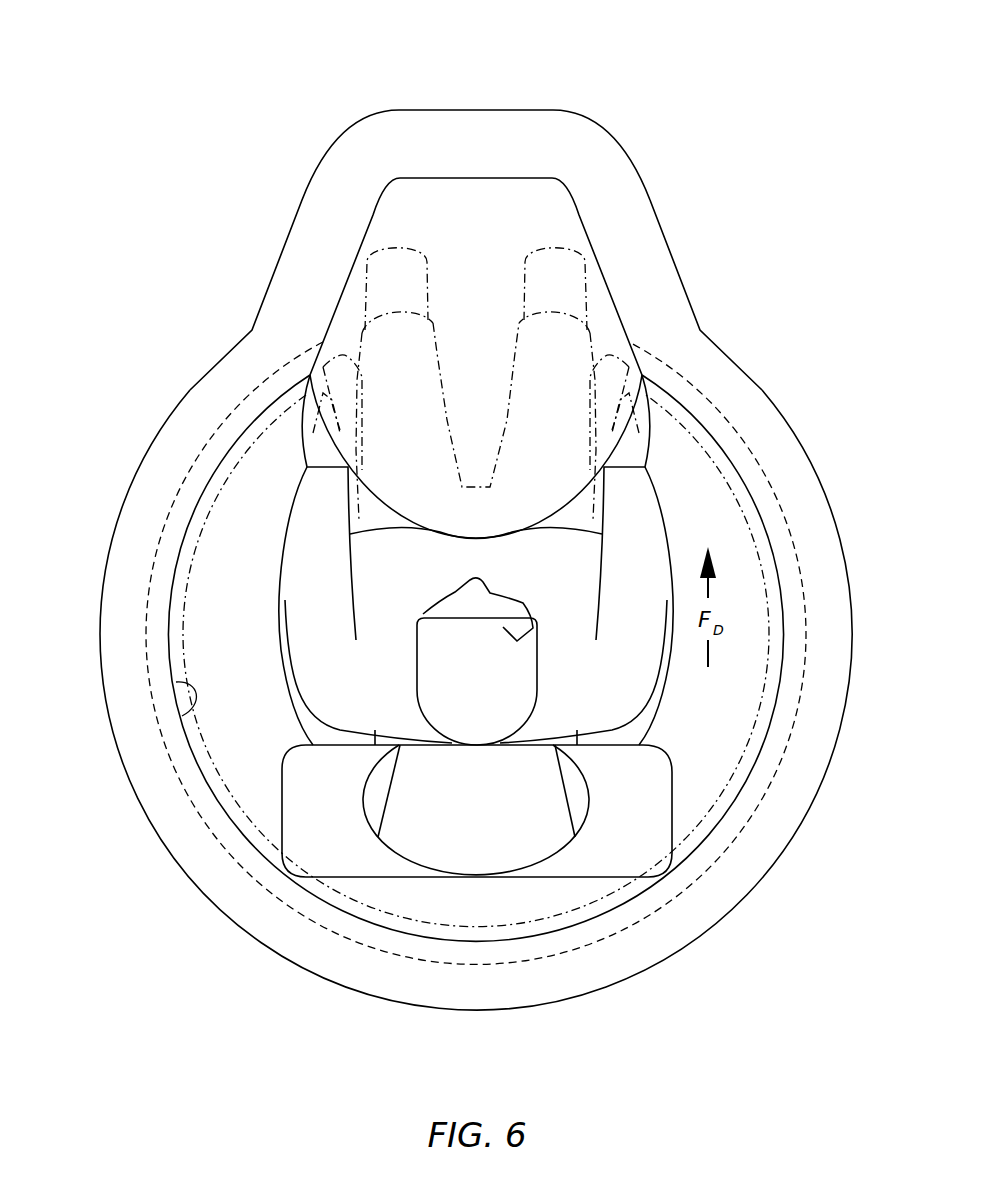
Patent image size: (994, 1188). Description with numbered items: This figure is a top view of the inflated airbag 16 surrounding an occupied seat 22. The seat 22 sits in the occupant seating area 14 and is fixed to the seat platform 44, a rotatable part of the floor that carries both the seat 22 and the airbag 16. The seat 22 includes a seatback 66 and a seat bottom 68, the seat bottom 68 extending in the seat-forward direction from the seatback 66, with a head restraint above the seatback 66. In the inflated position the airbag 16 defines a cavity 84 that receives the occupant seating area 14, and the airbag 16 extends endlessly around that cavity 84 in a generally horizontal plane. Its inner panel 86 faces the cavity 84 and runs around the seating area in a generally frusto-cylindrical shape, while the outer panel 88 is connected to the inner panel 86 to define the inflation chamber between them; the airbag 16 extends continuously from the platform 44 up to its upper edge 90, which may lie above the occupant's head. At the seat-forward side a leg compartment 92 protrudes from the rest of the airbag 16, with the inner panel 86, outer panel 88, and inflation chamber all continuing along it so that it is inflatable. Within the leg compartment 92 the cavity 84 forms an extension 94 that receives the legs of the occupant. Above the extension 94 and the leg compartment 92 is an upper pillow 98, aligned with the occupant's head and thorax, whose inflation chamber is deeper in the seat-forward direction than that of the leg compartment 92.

The occupant seating area 14 is at (366, 514).
The airbag 16 is at (652, 270).
The seat 22 is at (630, 823).
The seat platform 44 is at (735, 430).
The seatback 66 is at (645, 778).
The seat bottom 68 is at (663, 698).
The cavity 84 is at (730, 523).
The inner panel 86 is at (193, 693).
The outer panel 88 is at (125, 503).
The upper edge 90 is at (232, 892).
The leg compartment 92 is at (478, 222).
The extension 94 is at (652, 200).
The upper pillow 98 is at (533, 210).